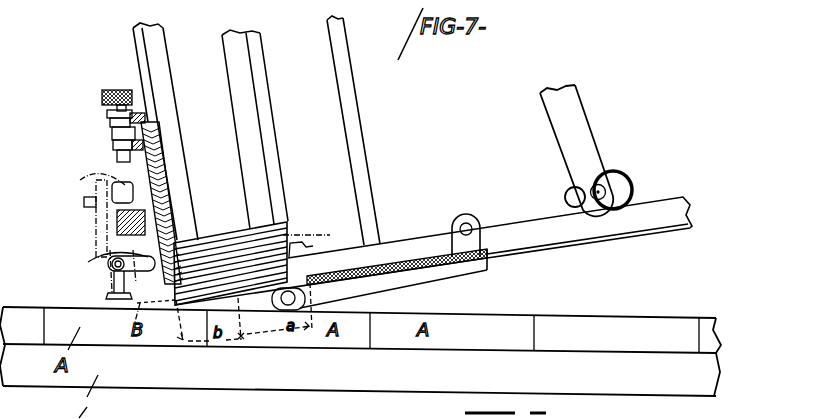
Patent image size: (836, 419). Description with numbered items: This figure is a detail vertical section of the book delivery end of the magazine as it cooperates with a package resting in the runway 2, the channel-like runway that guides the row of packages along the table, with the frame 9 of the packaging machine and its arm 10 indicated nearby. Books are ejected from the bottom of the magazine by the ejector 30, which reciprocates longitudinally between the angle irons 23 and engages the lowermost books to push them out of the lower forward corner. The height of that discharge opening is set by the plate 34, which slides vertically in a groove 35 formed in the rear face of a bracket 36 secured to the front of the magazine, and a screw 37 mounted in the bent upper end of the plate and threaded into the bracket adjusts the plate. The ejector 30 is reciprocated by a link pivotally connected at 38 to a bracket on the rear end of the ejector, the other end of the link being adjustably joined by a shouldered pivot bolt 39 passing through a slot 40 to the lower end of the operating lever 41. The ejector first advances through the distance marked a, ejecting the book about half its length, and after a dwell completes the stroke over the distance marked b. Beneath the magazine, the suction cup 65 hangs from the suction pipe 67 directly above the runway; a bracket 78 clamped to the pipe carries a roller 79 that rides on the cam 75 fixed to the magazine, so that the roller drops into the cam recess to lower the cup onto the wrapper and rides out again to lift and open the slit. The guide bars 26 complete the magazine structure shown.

The runway 2 is at (708, 320).
The frame 9 is at (333, 241).
The arm 10 is at (402, 260).
The angle irons 23 is at (641, 220).
The guide bars 26 is at (222, 44).
The ejector 30 is at (418, 262).
The plate 34 is at (145, 118).
The groove 35 is at (162, 139).
The bracket 36 is at (113, 152).
The screw 37 is at (110, 114).
The pivot 38 is at (466, 226).
The shouldered pivot bolt 39 is at (600, 184).
The slot 40 is at (570, 199).
The operating lever 41 is at (576, 102).
The suction cup 65 is at (110, 294).
The suction pipe 67 is at (110, 252).
The cam 75 is at (118, 226).
The bracket 78 is at (98, 222).
The roller 79 is at (100, 177).